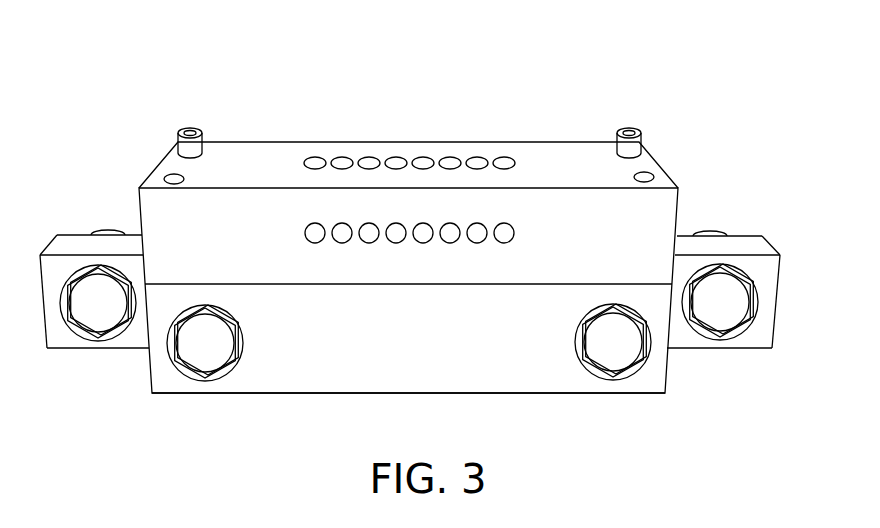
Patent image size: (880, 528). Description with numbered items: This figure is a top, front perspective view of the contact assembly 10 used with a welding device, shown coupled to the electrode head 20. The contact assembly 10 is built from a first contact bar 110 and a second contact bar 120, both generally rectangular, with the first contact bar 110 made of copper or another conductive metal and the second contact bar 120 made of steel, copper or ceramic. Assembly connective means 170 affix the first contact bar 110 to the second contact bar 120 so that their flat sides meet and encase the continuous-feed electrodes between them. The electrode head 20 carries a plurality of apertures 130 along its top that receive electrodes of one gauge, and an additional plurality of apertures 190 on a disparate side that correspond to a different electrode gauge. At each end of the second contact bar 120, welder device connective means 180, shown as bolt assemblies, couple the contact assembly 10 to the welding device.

The contact assembly 10 is at (662, 110).
The electrode head 20 is at (642, 152).
The first contact bar 110 is at (565, 384).
The second contact bar 120 is at (737, 242).
The plurality of apertures 130 is at (455, 158).
The assembly connective means 170 is at (176, 386).
The welder device connective means 180 is at (75, 355).
The plurality of apertures 190 is at (522, 233).